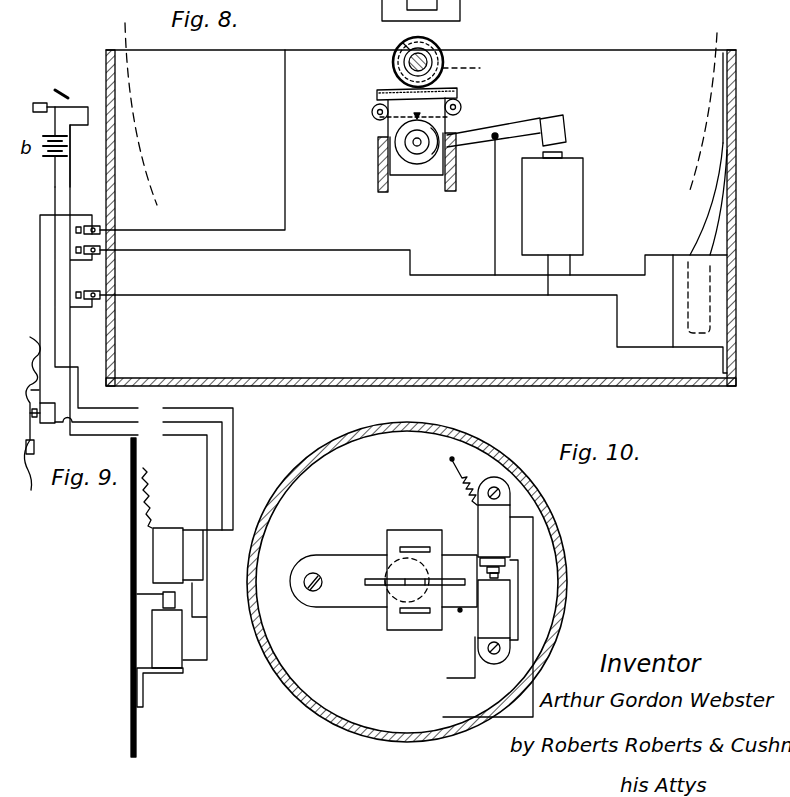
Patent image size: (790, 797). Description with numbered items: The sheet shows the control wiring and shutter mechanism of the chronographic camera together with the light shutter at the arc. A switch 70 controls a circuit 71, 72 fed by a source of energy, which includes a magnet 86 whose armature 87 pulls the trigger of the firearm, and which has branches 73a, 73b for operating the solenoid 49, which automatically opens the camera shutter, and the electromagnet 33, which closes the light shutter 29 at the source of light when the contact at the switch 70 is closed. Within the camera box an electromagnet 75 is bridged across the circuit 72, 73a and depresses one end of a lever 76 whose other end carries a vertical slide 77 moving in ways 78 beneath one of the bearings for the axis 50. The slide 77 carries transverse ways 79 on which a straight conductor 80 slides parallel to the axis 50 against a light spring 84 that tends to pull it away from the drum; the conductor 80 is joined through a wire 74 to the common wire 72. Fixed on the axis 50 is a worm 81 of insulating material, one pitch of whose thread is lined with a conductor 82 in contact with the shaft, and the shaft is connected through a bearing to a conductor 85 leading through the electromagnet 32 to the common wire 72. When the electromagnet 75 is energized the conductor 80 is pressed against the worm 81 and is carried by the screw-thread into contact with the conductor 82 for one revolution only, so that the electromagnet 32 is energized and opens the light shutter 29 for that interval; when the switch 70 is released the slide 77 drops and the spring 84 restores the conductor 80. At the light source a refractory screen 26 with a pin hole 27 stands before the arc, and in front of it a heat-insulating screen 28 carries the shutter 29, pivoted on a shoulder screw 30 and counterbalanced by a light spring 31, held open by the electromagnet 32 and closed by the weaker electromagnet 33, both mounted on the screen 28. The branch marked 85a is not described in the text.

In FIG. 10, the refractory screen 26 is at (375, 610).
In FIG. 10, the pin hole 27 is at (407, 583).
In FIG. 9, the heat-insulating screen 28 is at (137, 735).
In FIG. 10, the heat-insulating screen 28 is at (397, 447).
In FIG. 9, the shutter 29 is at (130, 580).
In FIG. 10, the shutter 29 is at (415, 632).
In FIG. 10, the shoulder screw 30 is at (307, 588).
In FIG. 9, the light spring 31 is at (152, 518).
In FIG. 10, the light spring 31 is at (463, 490).
In FIG. 9, the electromagnet 32 is at (167, 543).
In FIG. 10, the electromagnet 32 is at (503, 525).
In FIG. 9, the electromagnet 33 is at (167, 633).
In FIG. 10, the electromagnet 33 is at (503, 622).
In FIG. 8, the solenoid 49 is at (673, 323).
In FIG. 8, the axis 50 is at (421, 57).
In FIG. 8, the switch 70 is at (60, 125).
In FIG. 8, the circuit 71 is at (72, 172).
In FIG. 8, the common wire 72 is at (337, 252).
In FIG. 9, the common wire 72 is at (233, 433).
In FIG. 10, the common wire 72 is at (463, 690).
In FIG. 8, the branch 73a is at (342, 297).
In FIG. 9, the branch 73b is at (233, 465).
In FIG. 8, the wire 74 is at (494, 247).
In FIG. 8, the electromagnet 75 is at (648, 203).
In FIG. 8, the lever 76 is at (523, 133).
In FIG. 8, the vertical slide 77 is at (415, 168).
In FIG. 8, the ways 78 is at (377, 160).
In FIG. 8, the transverse ways 79 is at (380, 118).
In FIG. 8, the straight conductor 80 is at (420, 113).
In FIG. 8, the worm 81 is at (403, 43).
In FIG. 8, the conductor 82 is at (475, 66).
In FIG. 8, the light spring 84 is at (387, 107).
In FIG. 8, the conductor 85 is at (228, 232).
In FIG. 9, the conductor 85a is at (200, 660).
In FIG. 8, the magnet 86 is at (57, 412).
In FIG. 8, the armature 87 is at (30, 424).